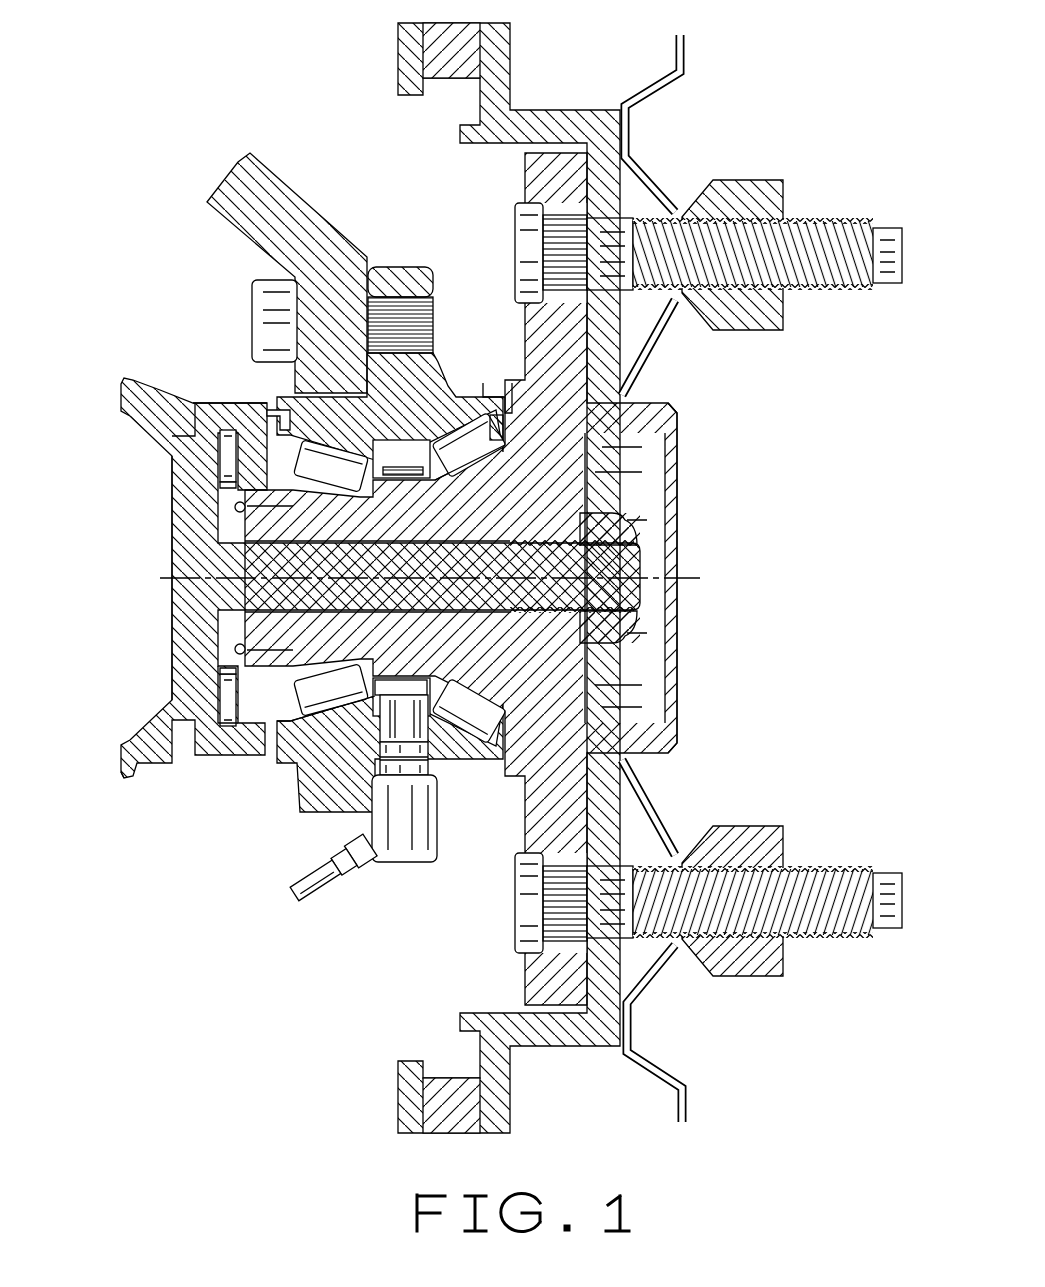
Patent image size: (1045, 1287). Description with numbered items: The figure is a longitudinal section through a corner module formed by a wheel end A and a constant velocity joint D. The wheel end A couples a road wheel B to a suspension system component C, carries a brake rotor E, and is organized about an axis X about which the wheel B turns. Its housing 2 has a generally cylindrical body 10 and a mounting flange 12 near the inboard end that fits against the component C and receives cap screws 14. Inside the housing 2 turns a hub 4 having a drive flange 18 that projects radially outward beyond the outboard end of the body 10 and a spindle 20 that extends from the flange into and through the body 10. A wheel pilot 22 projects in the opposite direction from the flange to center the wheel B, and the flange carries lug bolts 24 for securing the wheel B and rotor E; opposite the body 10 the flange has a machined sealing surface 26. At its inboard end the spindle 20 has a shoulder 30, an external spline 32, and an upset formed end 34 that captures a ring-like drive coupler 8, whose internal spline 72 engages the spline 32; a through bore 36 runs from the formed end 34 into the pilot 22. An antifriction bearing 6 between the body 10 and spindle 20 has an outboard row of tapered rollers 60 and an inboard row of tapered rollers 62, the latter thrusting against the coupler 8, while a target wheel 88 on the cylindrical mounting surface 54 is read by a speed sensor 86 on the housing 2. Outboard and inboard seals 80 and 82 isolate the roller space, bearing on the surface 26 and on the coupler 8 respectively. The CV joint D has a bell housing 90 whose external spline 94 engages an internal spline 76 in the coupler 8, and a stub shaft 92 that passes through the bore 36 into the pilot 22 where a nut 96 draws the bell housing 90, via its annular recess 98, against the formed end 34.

The housing 2 is at (284, 760).
The hub 4 is at (592, 460).
The antifriction bearing 6 is at (503, 689).
The drive coupler 8 is at (198, 400).
The cylindrical body 10 is at (462, 745).
The mounting flange 12 is at (422, 278).
The cap screws 14 is at (255, 290).
The drive flange 18 is at (570, 812).
The spindle 20 is at (583, 647).
The wheel pilot 22 is at (663, 740).
The lug bolts 24 is at (800, 855).
The machined sealing surface 26 is at (522, 790).
The shoulder 30 is at (228, 684).
The external spline 32 is at (222, 652).
The formed end 34 is at (235, 500).
The through bore 36 is at (578, 592).
The cylindrical mounting surface 54 is at (400, 468).
The outboard row of tapered rollers 60 is at (578, 483).
The inboard row of tapered rollers 62 is at (330, 525).
The internal spline 72 is at (220, 728).
The internal spline 76 is at (222, 468).
The outboard seal 80 is at (510, 395).
The inboard seal 82 is at (278, 425).
The speed sensor 86 is at (405, 850).
The target wheel 88 is at (442, 405).
The bell housing 90 is at (133, 765).
The stub shaft 92 is at (623, 563).
The external spline 94 is at (228, 485).
The nut 96 is at (617, 523).
The annular recess 98 is at (240, 622).
The wheel end A is at (721, 391).
The road wheel B is at (693, 65).
The suspension system component C is at (314, 203).
The constant velocity (CV) joint D is at (98, 404).
The brake rotor E is at (513, 62).
The axis X is at (416, 577).